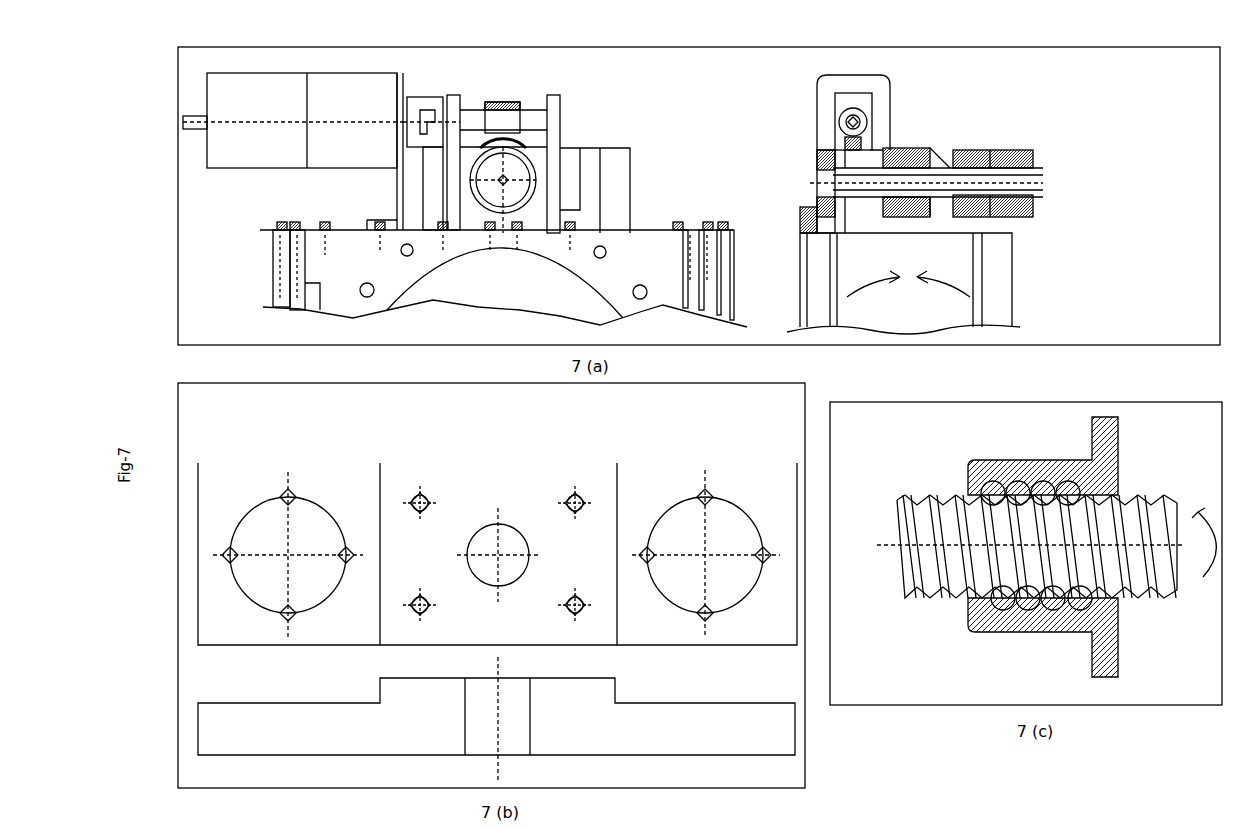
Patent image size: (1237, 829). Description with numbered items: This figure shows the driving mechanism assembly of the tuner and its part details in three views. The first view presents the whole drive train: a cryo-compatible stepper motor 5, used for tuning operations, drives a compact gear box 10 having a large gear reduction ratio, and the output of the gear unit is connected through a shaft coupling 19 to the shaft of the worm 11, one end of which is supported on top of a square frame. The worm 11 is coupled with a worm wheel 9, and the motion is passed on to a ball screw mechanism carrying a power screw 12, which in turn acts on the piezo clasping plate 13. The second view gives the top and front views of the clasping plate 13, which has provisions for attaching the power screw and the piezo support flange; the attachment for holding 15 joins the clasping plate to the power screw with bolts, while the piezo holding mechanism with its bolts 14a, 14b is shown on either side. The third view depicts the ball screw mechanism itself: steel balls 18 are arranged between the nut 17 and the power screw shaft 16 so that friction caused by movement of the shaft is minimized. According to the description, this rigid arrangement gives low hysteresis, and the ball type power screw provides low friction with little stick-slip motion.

The stepper motor 5 is at (242, 162).
The compact gear box 10 is at (357, 157).
The shaft coupling 19 is at (418, 107).
The worm 11 is at (513, 102).
The worm wheel 9 is at (532, 168).
The power screw 12 is at (960, 167).
The piezo clasping plate 13 is at (1028, 153).
The bolt 14a is at (302, 478).
The bolt 14b is at (698, 482).
The attachment for holding 15 is at (490, 493).
The power screw shaft 16 is at (965, 503).
The nut 17 is at (1130, 453).
The steel balls 18 is at (1025, 602).